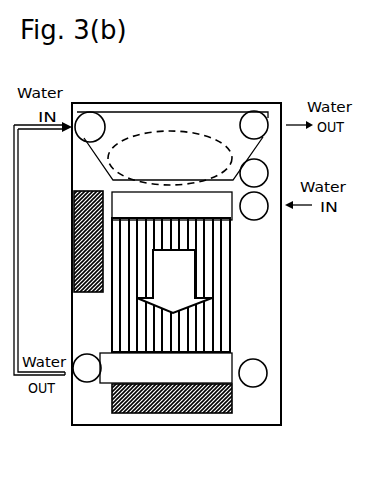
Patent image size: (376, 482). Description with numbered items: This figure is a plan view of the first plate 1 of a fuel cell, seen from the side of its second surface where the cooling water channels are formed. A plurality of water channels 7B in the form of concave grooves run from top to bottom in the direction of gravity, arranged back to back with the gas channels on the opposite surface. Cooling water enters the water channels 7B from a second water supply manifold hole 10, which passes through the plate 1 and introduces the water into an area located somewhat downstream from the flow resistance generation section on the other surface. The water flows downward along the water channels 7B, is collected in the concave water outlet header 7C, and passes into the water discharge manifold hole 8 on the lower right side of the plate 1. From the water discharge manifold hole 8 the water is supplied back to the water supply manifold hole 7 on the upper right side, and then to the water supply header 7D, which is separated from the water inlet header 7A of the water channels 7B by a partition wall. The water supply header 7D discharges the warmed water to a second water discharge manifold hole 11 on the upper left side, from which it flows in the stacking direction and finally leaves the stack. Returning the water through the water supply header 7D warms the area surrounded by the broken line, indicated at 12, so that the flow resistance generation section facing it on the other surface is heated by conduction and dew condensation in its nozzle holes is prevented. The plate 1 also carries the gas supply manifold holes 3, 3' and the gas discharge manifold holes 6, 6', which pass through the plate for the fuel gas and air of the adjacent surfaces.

The plate 1 is at (268, 329).
The gas supply manifold hole 3 is at (280, 163).
The gas supply manifold hole 3' is at (66, 241).
The gas discharge manifold hole 6 is at (279, 393).
The gas discharge manifold hole 6' is at (153, 410).
The water supply manifold hole 7 is at (78, 134).
The water inlet header 7A is at (193, 213).
The water channels 7B is at (213, 317).
The water outlet header 7C is at (218, 413).
The water supply header 7D is at (203, 127).
The water discharge manifold hole 8 is at (82, 380).
The second water supply manifold hole 10 is at (262, 213).
The second water discharge manifold hole 11 is at (262, 118).
The water surface (dashed) 12 is at (155, 150).